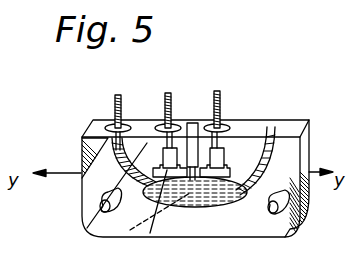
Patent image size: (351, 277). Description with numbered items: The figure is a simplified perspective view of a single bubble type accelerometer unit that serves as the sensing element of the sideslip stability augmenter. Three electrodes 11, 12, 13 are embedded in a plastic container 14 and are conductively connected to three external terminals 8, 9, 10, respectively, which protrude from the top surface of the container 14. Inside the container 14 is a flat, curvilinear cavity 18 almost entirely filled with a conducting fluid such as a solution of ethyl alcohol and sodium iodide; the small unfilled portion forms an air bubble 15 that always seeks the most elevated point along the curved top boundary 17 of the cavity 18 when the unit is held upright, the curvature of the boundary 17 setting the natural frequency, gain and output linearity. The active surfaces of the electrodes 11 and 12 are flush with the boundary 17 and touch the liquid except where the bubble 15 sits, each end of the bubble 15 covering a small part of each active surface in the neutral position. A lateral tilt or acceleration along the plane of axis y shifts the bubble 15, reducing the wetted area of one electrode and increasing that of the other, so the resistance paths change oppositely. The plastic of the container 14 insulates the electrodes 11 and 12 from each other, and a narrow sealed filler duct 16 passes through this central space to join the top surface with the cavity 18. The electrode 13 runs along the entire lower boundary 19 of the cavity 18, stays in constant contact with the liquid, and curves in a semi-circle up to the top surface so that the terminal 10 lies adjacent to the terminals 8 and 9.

The external terminal 8 is at (230, 81).
The external terminal 9 is at (161, 80).
The external terminal 10 is at (113, 105).
The electrode 11 is at (212, 178).
The electrode 12 is at (151, 180).
The electrode 13 is at (140, 180).
The plastic container 14 is at (100, 167).
The air bubble 15 is at (185, 173).
The sealed duct 16 is at (198, 100).
The curved top boundary 17 is at (119, 95).
The cavity 18 is at (230, 190).
The lower boundary 19 is at (236, 192).